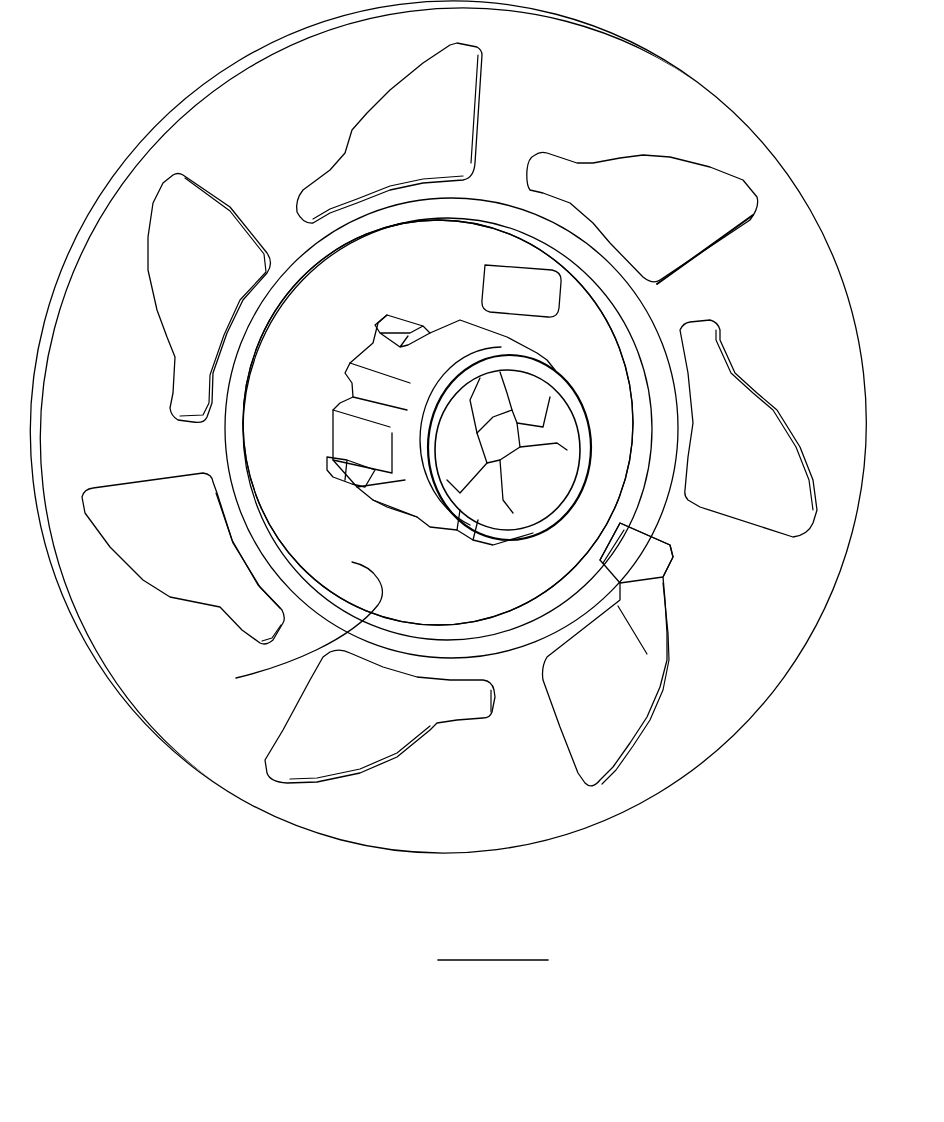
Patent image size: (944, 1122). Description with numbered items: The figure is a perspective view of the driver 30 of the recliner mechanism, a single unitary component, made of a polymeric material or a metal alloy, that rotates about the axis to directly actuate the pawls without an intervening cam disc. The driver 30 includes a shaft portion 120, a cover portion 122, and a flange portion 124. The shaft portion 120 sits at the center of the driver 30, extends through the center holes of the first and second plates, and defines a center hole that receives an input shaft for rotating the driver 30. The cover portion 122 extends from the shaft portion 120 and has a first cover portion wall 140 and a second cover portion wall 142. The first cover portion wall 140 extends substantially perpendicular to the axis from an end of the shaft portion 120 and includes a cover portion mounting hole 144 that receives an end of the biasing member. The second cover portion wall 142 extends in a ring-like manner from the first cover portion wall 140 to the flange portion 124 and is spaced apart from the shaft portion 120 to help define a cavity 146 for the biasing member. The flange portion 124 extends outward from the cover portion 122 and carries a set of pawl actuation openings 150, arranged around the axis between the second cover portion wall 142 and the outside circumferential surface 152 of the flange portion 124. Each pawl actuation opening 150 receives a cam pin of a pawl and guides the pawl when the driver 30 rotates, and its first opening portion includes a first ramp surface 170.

The driver 30 is at (188, 47).
The shaft portion 120 is at (586, 392).
The cover portion 122 is at (311, 511).
The flange portion 124 is at (125, 292).
The first cover portion wall 140 is at (438, 422).
The second cover portion wall 142 is at (636, 472).
The cover portion mounting hole 144 is at (485, 306).
The cavity 146 is at (345, 559).
The pawl actuation openings 150 is at (432, 142).
The outside circumferential surface 152 is at (140, 156).
The first ramp surface 170 is at (630, 556).